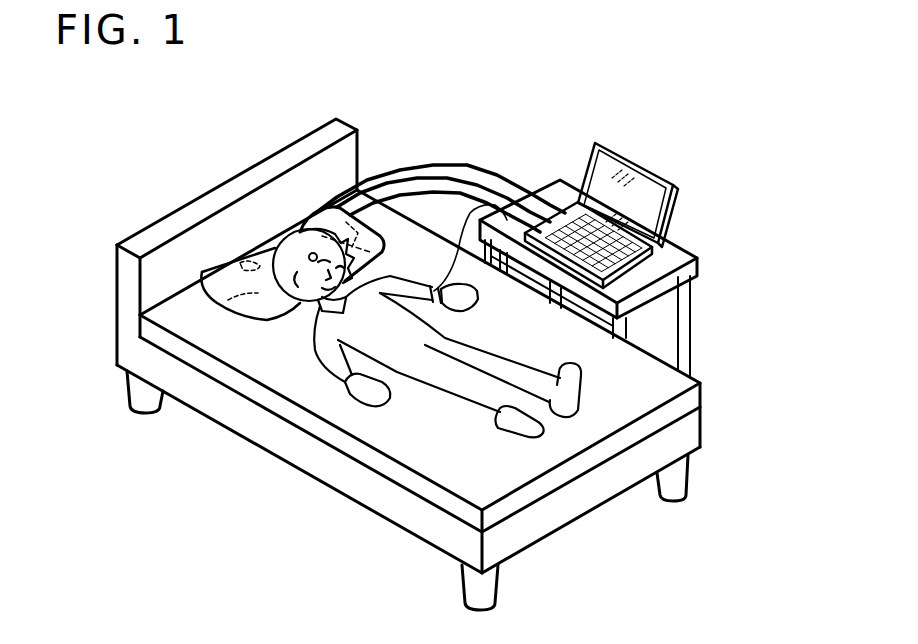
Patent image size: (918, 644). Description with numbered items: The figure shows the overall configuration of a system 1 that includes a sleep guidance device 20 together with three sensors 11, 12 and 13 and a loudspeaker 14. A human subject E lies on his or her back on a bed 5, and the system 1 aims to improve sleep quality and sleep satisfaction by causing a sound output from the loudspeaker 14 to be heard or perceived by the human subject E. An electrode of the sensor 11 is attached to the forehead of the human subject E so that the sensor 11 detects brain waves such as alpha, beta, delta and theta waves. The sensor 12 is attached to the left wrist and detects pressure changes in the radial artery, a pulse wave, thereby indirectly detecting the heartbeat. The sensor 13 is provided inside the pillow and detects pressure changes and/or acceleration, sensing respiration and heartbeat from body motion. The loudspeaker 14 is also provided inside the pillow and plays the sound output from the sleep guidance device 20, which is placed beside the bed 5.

The system 1 is at (752, 92).
The bed 5 is at (263, 427).
The sensor 11 is at (311, 253).
The sensor 12 is at (447, 311).
The sensor 13 is at (386, 251).
The loudspeaker 14 is at (240, 308).
The sleep guidance device 20 is at (620, 160).
The human subject E is at (427, 333).